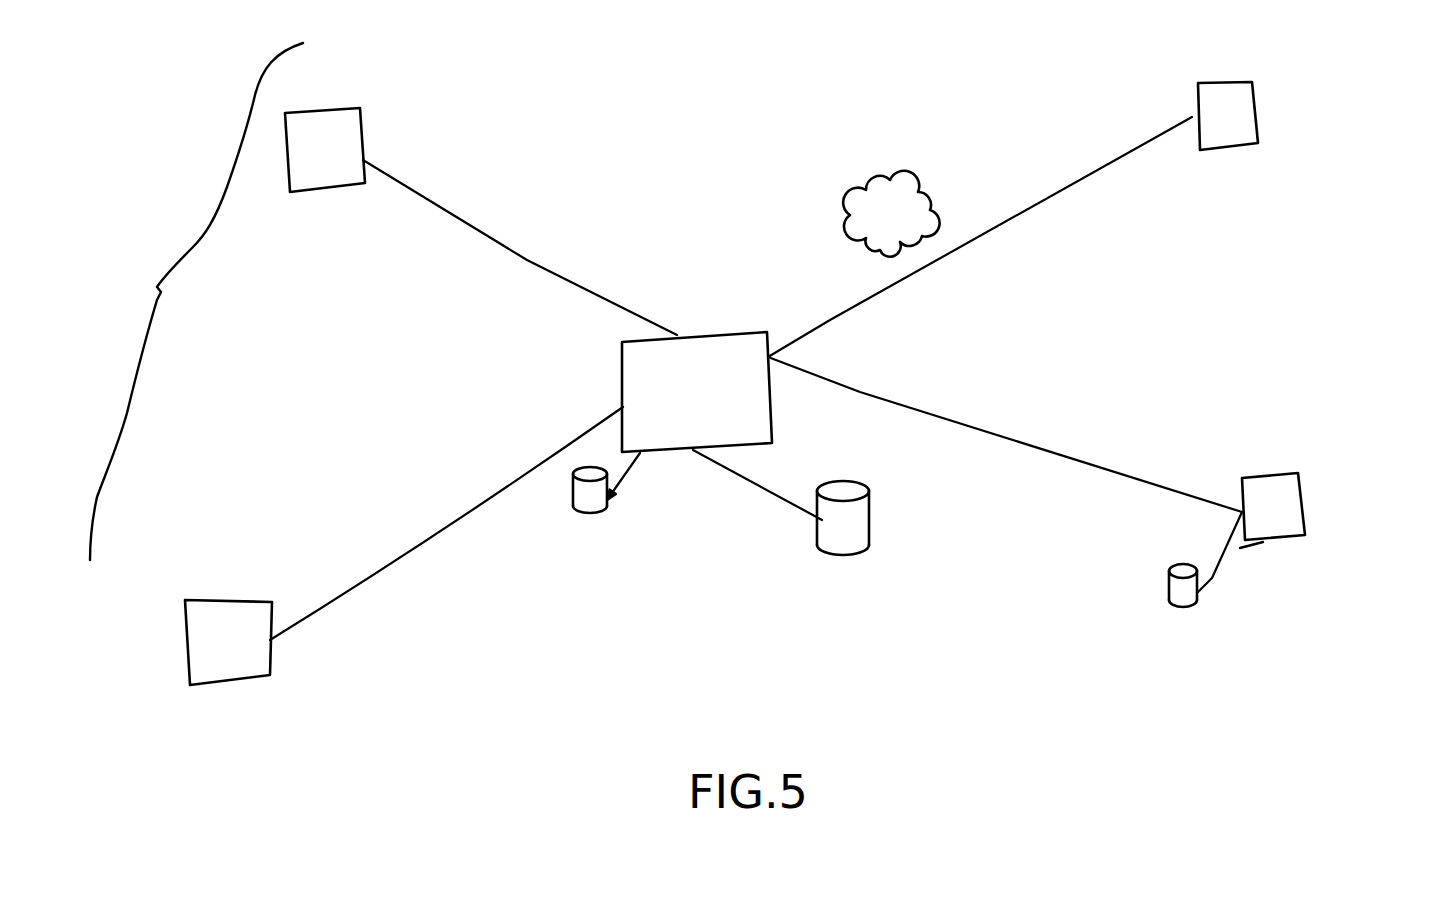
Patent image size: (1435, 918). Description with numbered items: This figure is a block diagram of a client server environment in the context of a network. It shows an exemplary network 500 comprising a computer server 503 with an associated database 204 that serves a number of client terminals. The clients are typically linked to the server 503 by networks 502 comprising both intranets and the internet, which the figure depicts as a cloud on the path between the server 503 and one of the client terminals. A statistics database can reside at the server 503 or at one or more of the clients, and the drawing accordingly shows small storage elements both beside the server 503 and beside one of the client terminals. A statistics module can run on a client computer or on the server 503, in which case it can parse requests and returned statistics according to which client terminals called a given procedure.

The network 500 is at (143, 293).
The network 502 is at (918, 192).
The computer server 503 is at (615, 377).
The database 204 is at (880, 520).